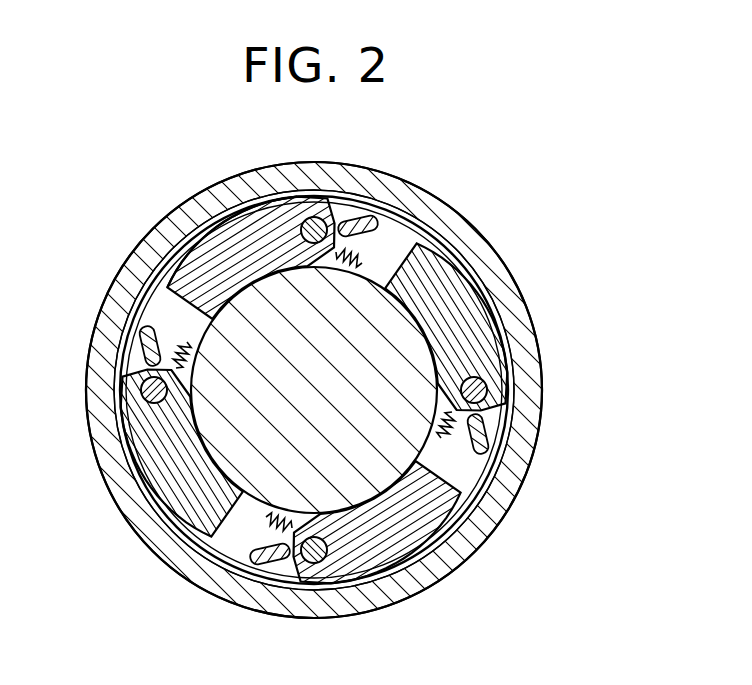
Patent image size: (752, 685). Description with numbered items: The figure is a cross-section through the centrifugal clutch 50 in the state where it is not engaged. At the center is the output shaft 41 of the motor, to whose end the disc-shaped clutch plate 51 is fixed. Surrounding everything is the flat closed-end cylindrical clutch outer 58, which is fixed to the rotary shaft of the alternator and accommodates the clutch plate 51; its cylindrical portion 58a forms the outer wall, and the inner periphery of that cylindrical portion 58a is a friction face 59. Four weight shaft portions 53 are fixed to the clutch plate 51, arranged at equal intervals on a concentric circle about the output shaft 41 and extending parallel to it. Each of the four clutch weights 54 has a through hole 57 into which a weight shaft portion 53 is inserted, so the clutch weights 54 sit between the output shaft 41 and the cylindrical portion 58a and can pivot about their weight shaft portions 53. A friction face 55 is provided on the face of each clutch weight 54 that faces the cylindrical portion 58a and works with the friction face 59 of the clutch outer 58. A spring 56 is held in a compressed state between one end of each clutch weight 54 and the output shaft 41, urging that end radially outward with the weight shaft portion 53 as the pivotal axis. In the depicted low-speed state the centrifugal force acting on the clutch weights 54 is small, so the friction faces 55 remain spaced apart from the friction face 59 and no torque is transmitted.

The output shaft 41 is at (262, 480).
The centrifugal clutch 50 is at (485, 174).
The clutch plate 51 is at (212, 548).
The weight shaft portion 53 is at (290, 203).
The clutch weight 54 is at (170, 281).
The friction face 55 is at (188, 284).
The spring 56 is at (362, 257).
The through hole 57 is at (318, 218).
The clutch outer 58 is at (536, 446).
The cylindrical portion 58a is at (485, 528).
The friction face 59 is at (495, 472).